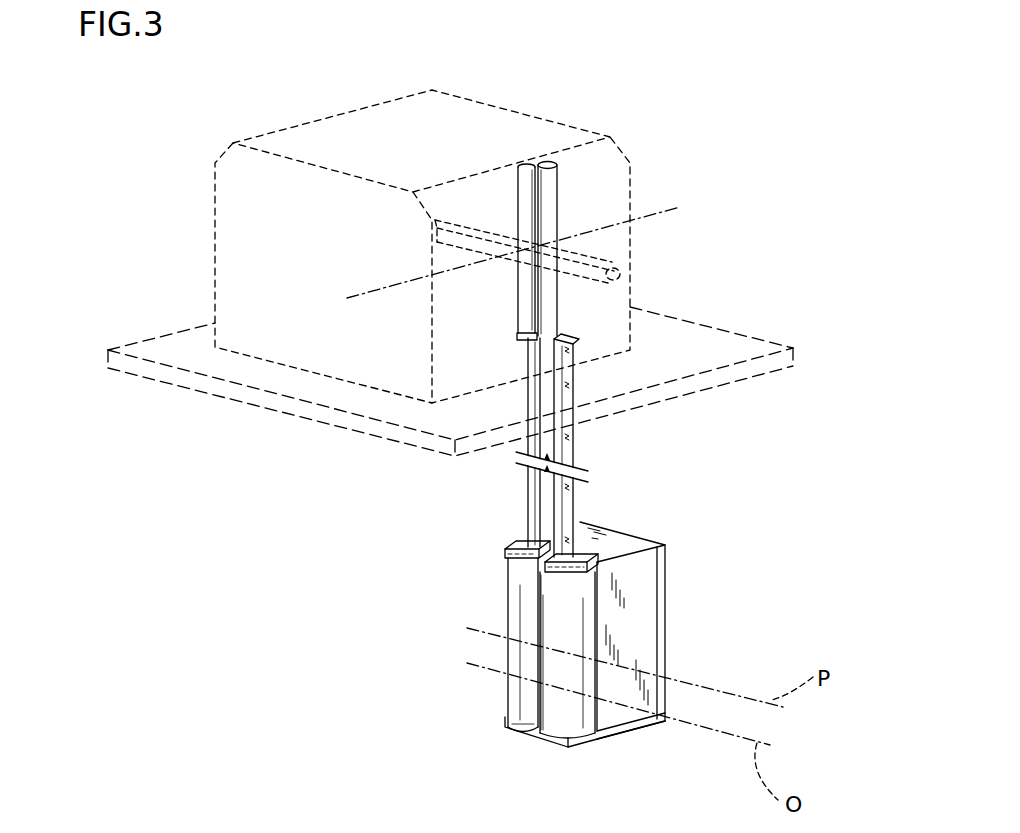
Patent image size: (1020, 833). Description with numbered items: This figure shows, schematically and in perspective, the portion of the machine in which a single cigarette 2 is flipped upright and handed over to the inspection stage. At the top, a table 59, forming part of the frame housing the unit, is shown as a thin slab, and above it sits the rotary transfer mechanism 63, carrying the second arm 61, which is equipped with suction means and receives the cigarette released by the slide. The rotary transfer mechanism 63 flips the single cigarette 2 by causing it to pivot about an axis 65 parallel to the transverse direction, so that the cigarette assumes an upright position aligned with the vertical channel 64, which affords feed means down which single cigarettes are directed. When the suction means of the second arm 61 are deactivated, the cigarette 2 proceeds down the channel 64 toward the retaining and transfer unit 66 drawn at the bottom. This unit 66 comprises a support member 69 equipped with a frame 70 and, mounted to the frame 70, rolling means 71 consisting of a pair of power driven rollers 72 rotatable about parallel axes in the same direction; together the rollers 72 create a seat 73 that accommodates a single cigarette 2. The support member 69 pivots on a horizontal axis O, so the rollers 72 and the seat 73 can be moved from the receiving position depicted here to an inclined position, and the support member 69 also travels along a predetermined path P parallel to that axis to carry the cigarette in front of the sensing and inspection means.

The cigarette 2 is at (551, 176).
The table 59 is at (158, 350).
The second arm 61 is at (509, 176).
The rotary transfer mechanism 63 is at (453, 122).
The vertical channel 64 is at (522, 223).
The axis 65 is at (367, 292).
The retaining and transfer unit 66 is at (478, 582).
The support member 69 is at (676, 697).
The frame 70 is at (646, 528).
The rolling means 71 is at (530, 724).
The power driven rollers 72 is at (508, 630).
The seat 73 is at (540, 688).